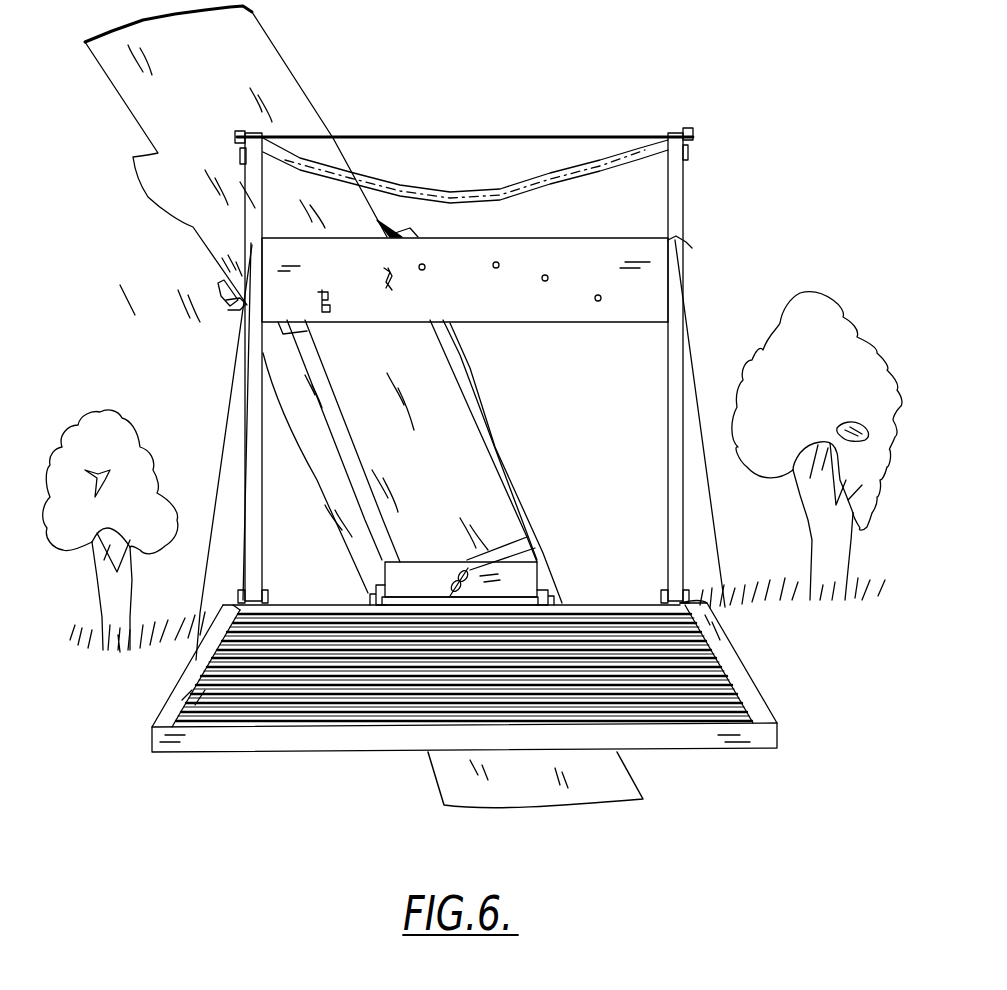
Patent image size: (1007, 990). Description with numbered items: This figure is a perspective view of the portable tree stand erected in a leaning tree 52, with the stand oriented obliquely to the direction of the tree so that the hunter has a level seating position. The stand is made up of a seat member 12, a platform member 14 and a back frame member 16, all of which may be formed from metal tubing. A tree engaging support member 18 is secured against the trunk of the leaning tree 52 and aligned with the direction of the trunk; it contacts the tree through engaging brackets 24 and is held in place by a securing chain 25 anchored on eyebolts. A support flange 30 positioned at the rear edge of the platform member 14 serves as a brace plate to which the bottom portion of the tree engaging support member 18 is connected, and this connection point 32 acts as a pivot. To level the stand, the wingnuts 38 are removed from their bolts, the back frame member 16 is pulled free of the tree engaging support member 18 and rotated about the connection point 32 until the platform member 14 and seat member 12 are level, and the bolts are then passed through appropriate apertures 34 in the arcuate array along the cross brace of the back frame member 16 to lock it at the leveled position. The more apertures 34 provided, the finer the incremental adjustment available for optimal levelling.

The seat member 12 is at (563, 135).
The platform member 14 is at (675, 738).
The back frame member 16 is at (250, 481).
The tree engaging support member 18 is at (330, 420).
The engaging brackets 24 is at (530, 538).
The securing chain 25 is at (220, 290).
The support flange 30 is at (527, 582).
The connection point 32 is at (530, 543).
The apertures 34 is at (546, 276).
The wingnuts 38 is at (320, 300).
The leaning tree 52 is at (160, 137).